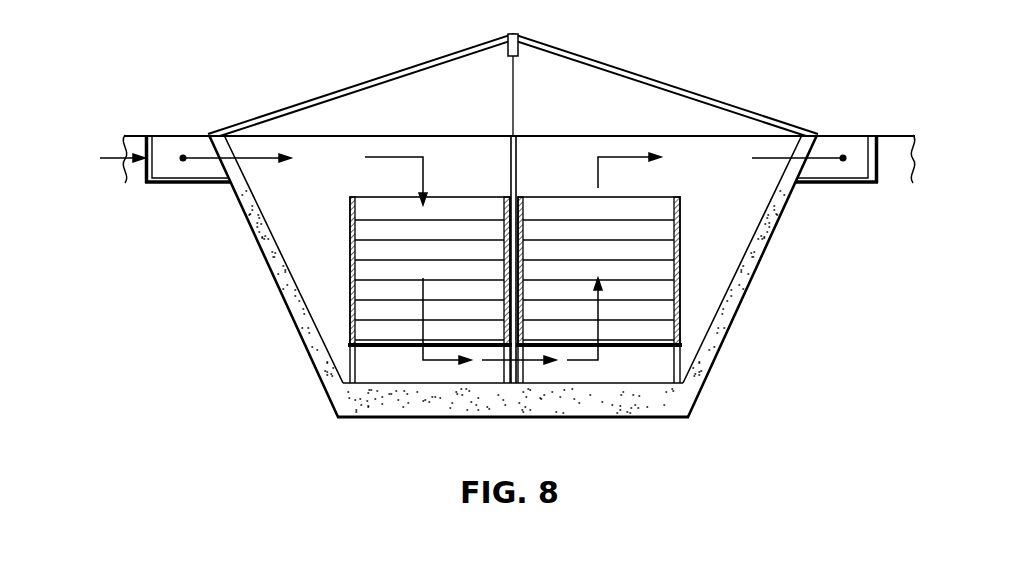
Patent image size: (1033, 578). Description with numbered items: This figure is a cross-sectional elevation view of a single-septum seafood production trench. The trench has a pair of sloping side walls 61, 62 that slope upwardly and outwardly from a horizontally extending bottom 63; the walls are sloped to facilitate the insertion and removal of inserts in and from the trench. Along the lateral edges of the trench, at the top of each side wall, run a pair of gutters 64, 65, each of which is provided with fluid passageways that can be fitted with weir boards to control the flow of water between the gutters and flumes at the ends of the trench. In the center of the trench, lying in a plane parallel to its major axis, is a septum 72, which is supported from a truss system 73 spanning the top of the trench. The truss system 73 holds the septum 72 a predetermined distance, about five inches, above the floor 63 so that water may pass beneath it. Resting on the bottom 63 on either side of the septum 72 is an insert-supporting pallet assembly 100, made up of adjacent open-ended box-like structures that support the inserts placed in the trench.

The side wall 61 is at (292, 292).
The side wall 62 is at (733, 292).
The bottom 63 is at (577, 375).
The gutter 64 is at (167, 168).
The gutter 65 is at (855, 168).
The septum 72 is at (518, 185).
The truss system 73 is at (597, 56).
The insert-supporting pallet assembly 100 is at (368, 362).